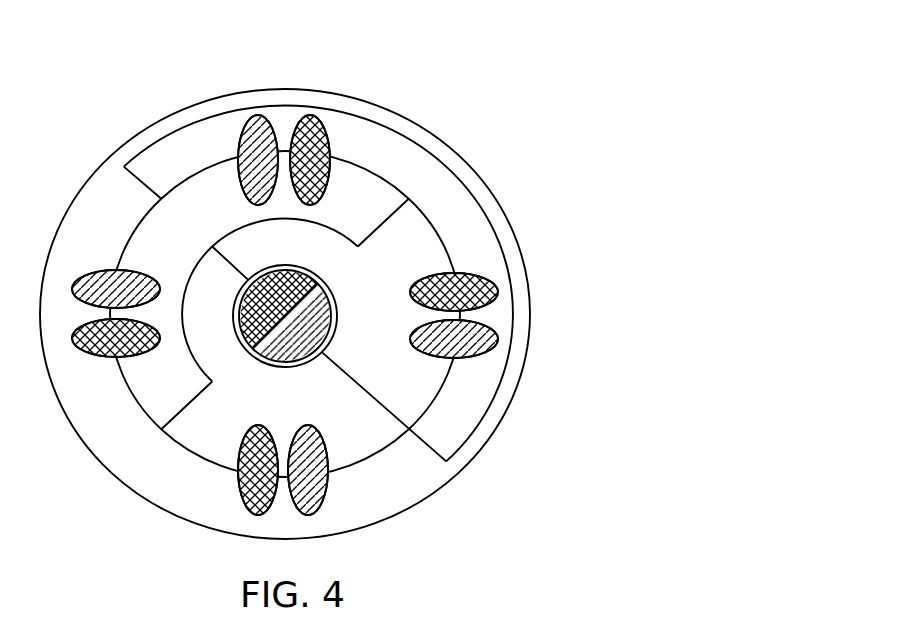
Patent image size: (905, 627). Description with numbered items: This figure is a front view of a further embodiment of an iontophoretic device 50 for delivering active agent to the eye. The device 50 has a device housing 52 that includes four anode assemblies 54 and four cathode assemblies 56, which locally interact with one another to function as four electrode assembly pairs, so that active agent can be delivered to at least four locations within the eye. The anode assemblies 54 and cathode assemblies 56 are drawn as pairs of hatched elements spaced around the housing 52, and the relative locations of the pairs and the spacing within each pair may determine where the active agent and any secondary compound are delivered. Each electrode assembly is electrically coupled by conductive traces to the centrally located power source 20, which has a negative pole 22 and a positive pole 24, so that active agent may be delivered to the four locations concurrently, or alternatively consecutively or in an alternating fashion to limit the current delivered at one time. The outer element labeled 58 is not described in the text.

The iontophoretic device 50 is at (385, 68).
The device housing 52 is at (460, 155).
The anode assemblies 54 is at (490, 282).
The cathode assemblies 56 is at (488, 352).
The stator core 58 is at (137, 223).
The power source 20 is at (237, 320).
The negative pole 22 is at (240, 341).
The positive pole 24 is at (293, 367).